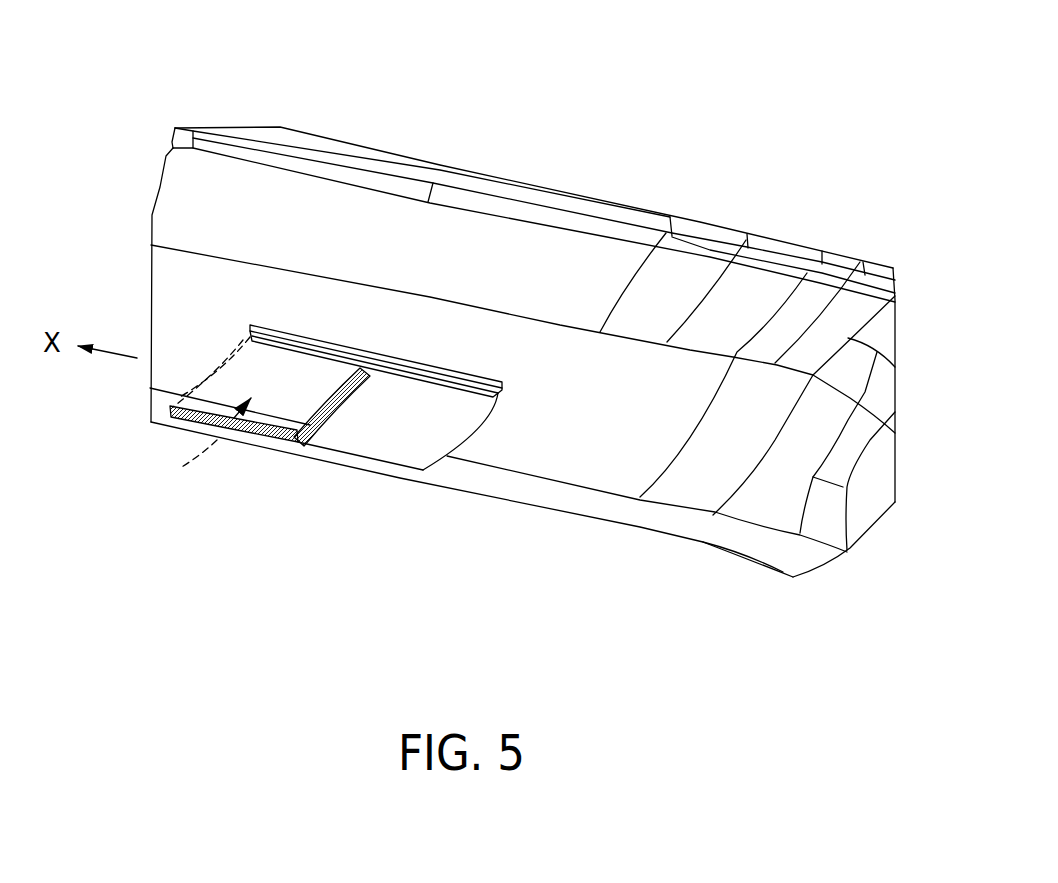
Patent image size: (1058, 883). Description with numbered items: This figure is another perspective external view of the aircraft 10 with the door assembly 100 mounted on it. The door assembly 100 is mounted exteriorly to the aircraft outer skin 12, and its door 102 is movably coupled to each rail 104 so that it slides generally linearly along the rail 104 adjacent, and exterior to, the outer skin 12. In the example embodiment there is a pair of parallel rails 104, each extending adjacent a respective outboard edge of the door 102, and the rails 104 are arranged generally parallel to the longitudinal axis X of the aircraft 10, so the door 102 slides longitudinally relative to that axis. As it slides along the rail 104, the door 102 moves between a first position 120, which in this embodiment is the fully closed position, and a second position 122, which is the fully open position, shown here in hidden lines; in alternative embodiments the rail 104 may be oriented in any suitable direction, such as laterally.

The aircraft 10 is at (705, 127).
The aircraft outer skin 12 is at (612, 474).
The door assembly 100 is at (309, 386).
The door 102 is at (430, 456).
The rail 104 is at (340, 345).
The first position 120 is at (383, 434).
The second position 122 is at (180, 468).